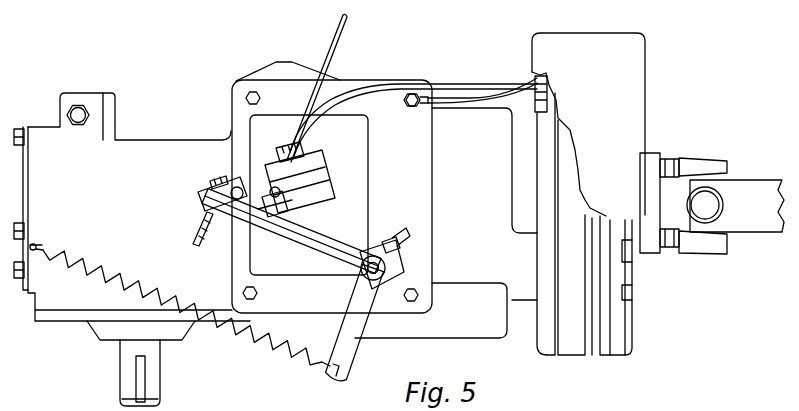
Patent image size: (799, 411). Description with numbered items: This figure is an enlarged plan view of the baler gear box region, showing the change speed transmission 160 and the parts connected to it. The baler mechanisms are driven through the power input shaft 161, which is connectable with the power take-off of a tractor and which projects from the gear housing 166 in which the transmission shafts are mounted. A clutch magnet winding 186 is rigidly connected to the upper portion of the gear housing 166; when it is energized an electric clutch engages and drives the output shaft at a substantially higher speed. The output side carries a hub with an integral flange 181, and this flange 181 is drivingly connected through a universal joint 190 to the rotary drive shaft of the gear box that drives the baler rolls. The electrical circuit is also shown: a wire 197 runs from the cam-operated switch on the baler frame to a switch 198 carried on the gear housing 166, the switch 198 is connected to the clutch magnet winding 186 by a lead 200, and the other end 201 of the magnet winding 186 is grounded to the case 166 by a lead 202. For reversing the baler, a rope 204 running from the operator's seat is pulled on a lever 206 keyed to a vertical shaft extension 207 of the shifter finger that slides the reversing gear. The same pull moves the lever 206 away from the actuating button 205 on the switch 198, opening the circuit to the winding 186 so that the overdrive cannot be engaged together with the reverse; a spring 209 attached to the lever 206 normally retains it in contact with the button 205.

The change speed transmission 160 is at (417, 194).
The power input shaft 161 is at (157, 376).
The gear housing 166 is at (55, 312).
The flange 181 is at (647, 244).
The clutch magnet winding 186 is at (544, 348).
The universal joint 190 is at (762, 179).
The wire 197 is at (343, 30).
The switch 198 is at (300, 177).
The lead 200 is at (333, 102).
The other end of magnet winding 201 is at (541, 86).
The lead 202 is at (535, 90).
The rope 204 is at (205, 211).
The actuating button 205 is at (280, 212).
The lever 206 is at (322, 258).
The vertical shaft extension 207 is at (365, 276).
The spring 209 is at (318, 366).